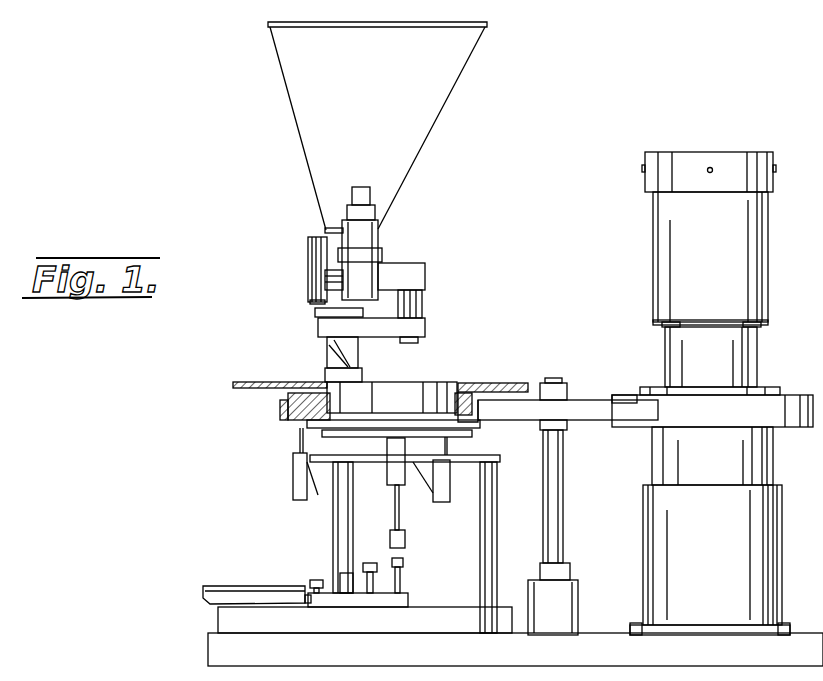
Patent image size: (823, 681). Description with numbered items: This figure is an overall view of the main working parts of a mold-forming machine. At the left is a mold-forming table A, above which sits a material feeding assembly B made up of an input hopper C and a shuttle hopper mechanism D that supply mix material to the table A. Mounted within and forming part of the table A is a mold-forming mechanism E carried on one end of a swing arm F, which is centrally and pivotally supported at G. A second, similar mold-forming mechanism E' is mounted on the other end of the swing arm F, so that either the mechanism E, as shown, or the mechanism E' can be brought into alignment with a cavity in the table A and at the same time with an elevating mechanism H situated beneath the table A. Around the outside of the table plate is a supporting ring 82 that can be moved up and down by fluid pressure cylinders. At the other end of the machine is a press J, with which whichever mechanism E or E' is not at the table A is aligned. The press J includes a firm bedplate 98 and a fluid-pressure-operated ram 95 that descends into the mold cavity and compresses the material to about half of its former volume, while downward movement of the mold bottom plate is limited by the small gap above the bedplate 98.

The mold-forming table A is at (305, 372).
The material feeding assembly B is at (302, 253).
The input hopper C is at (412, 112).
The shuttle hopper mechanism D is at (345, 345).
The mold-forming mechanism E is at (427, 368).
The second mold-forming mechanism E' is at (715, 384).
The swing arm F is at (523, 412).
The pivot G is at (560, 378).
The elevating mechanism H is at (320, 508).
The press J is at (742, 250).
The supporting ring 82 is at (300, 427).
The ram 95 is at (692, 340).
The bedplate 98 is at (668, 452).